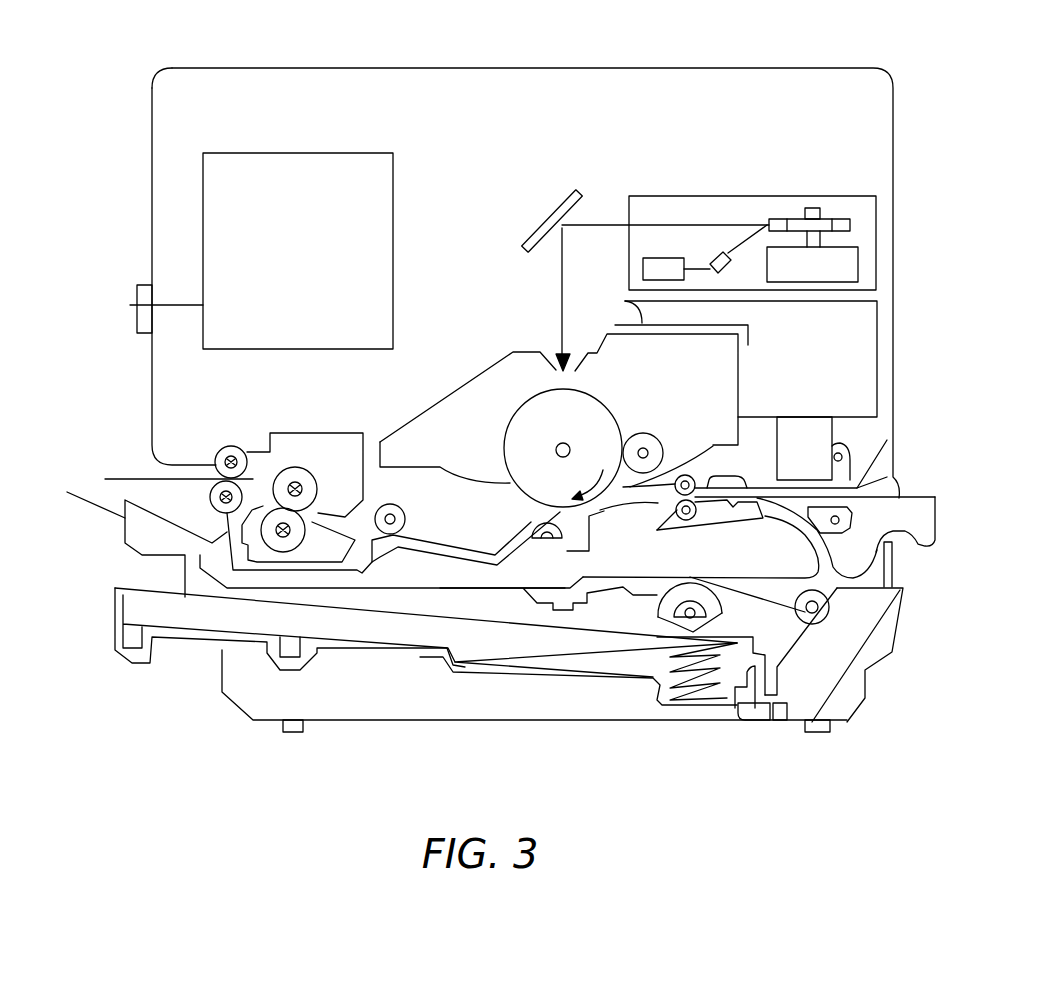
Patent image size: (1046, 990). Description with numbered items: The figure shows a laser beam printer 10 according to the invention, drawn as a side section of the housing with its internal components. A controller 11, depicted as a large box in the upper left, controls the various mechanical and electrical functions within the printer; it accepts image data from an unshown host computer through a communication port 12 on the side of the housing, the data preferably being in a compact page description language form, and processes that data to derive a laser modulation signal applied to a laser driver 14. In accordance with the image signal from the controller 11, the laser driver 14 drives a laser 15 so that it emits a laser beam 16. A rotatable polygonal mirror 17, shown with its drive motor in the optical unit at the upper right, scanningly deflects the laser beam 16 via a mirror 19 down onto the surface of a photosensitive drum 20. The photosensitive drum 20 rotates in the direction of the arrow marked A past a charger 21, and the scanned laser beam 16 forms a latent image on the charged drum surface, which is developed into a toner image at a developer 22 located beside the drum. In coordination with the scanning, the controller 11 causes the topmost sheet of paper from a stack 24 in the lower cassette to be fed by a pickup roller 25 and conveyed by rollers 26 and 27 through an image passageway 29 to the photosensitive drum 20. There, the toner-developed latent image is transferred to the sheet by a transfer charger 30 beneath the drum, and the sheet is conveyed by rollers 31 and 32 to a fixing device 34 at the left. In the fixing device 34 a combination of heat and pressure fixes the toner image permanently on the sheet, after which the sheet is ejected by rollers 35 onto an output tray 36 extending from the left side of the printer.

The laser beam printer 10 is at (316, 52).
The controller 11 is at (264, 153).
The communication port 12 is at (130, 304).
The laser driver 14 is at (643, 272).
The laser 15 is at (724, 270).
The laser beam 16 is at (673, 225).
The rotatable polygonal mirror 17 is at (850, 225).
The mirror 19 is at (543, 222).
The photosensitive drum 20 is at (530, 413).
The charger 21 is at (423, 440).
The developer 22 is at (660, 435).
The stack 24 is at (133, 607).
The pickup roller 25 is at (675, 620).
The roller 26 is at (817, 612).
The roller 27 is at (684, 475).
The image passageway 29 is at (837, 553).
The transfer charger 30 is at (681, 520).
The roller 31 is at (537, 527).
The roller 32 is at (397, 507).
The fixing device 34 is at (333, 433).
The rollers 35 is at (231, 446).
The output tray 36 is at (82, 492).